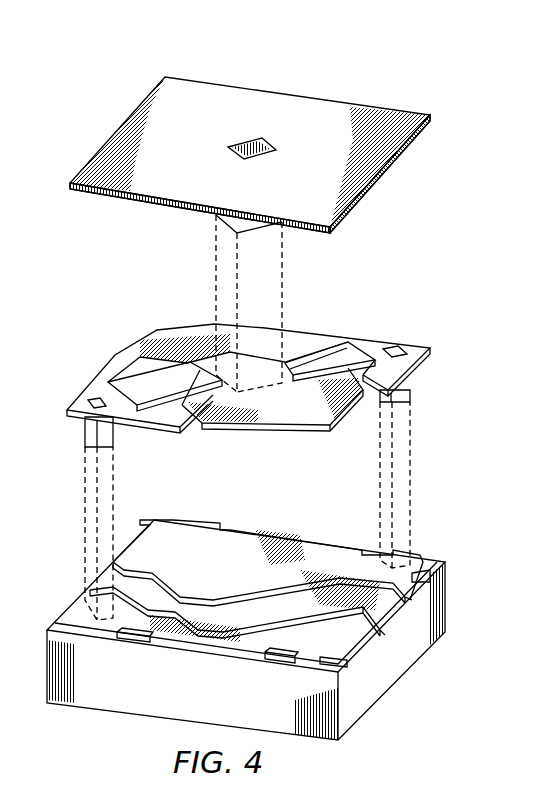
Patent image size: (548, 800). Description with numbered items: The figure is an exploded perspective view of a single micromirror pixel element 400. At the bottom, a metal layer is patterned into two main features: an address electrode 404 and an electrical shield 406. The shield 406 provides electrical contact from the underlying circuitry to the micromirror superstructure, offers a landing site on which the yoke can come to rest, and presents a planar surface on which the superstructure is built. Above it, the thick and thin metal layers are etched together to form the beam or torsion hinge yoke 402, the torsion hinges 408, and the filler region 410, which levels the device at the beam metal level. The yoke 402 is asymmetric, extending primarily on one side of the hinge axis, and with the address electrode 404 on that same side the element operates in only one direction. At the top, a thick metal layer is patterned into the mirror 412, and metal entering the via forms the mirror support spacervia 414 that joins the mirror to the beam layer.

The micromirror pixel element 400 is at (100, 82).
The torsion hinge yoke 402 is at (286, 430).
The address electrode 404 is at (248, 608).
The electrical shield 406 is at (302, 542).
The torsion hinges 408 is at (137, 402).
The filler region 410 is at (178, 335).
The mirror 412 is at (284, 101).
The mirror support spacervia 414 is at (258, 224).